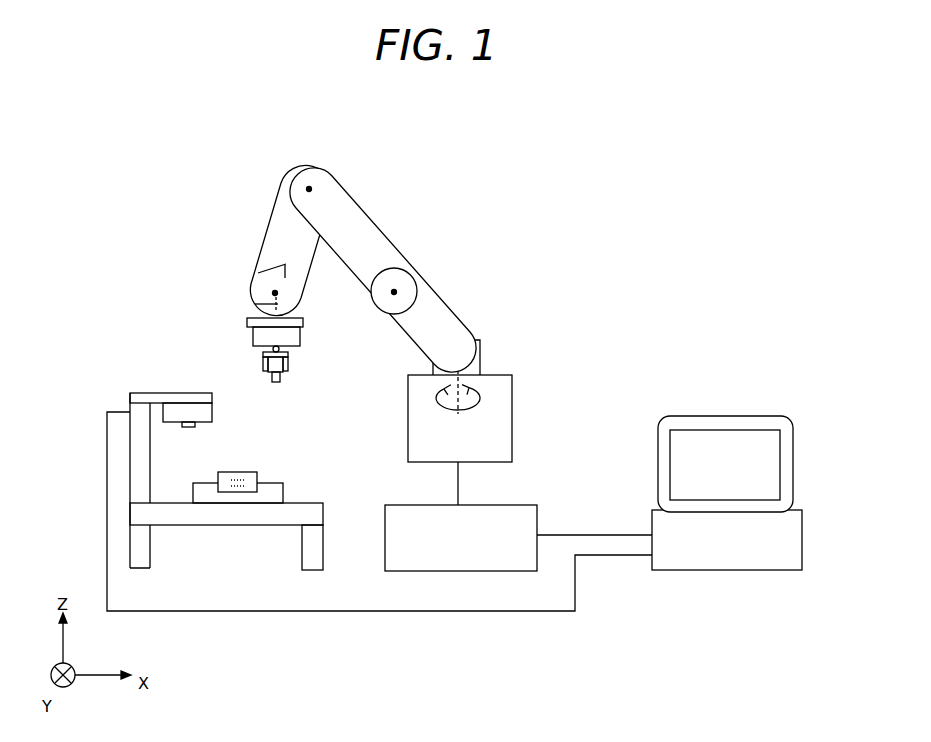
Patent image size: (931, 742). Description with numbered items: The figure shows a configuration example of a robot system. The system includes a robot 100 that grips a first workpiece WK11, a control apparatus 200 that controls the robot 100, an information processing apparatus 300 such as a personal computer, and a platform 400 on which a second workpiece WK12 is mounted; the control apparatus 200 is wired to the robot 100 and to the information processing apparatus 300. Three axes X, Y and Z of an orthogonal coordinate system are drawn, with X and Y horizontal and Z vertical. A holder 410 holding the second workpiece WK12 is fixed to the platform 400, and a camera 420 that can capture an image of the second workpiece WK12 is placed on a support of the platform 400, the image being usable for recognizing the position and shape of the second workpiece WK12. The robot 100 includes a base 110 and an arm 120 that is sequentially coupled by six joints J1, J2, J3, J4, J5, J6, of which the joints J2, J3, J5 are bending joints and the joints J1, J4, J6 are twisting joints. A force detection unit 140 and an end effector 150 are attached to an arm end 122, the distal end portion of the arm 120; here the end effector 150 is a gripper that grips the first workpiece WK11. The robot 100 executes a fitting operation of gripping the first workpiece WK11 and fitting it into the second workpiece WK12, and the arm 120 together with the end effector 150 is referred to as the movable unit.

The robot 100 is at (406, 124).
The base 110 is at (495, 389).
The arm 120 is at (383, 258).
The arm end 122 is at (285, 263).
The force detection unit 140 is at (253, 340).
The end effector 150 is at (288, 362).
The first workpiece WK11 is at (280, 378).
The second workpiece WK12 is at (257, 478).
The control apparatus 200 is at (523, 505).
The information processing apparatus 300 is at (745, 417).
The platform 400 is at (221, 527).
The holder 410 is at (283, 497).
The camera 420 is at (190, 402).
The joint J1 is at (457, 420).
The joint J2 is at (396, 292).
The joint J3 is at (311, 189).
The joint J4 is at (258, 272).
The joint J5 is at (275, 293).
The joint J6 is at (255, 304).